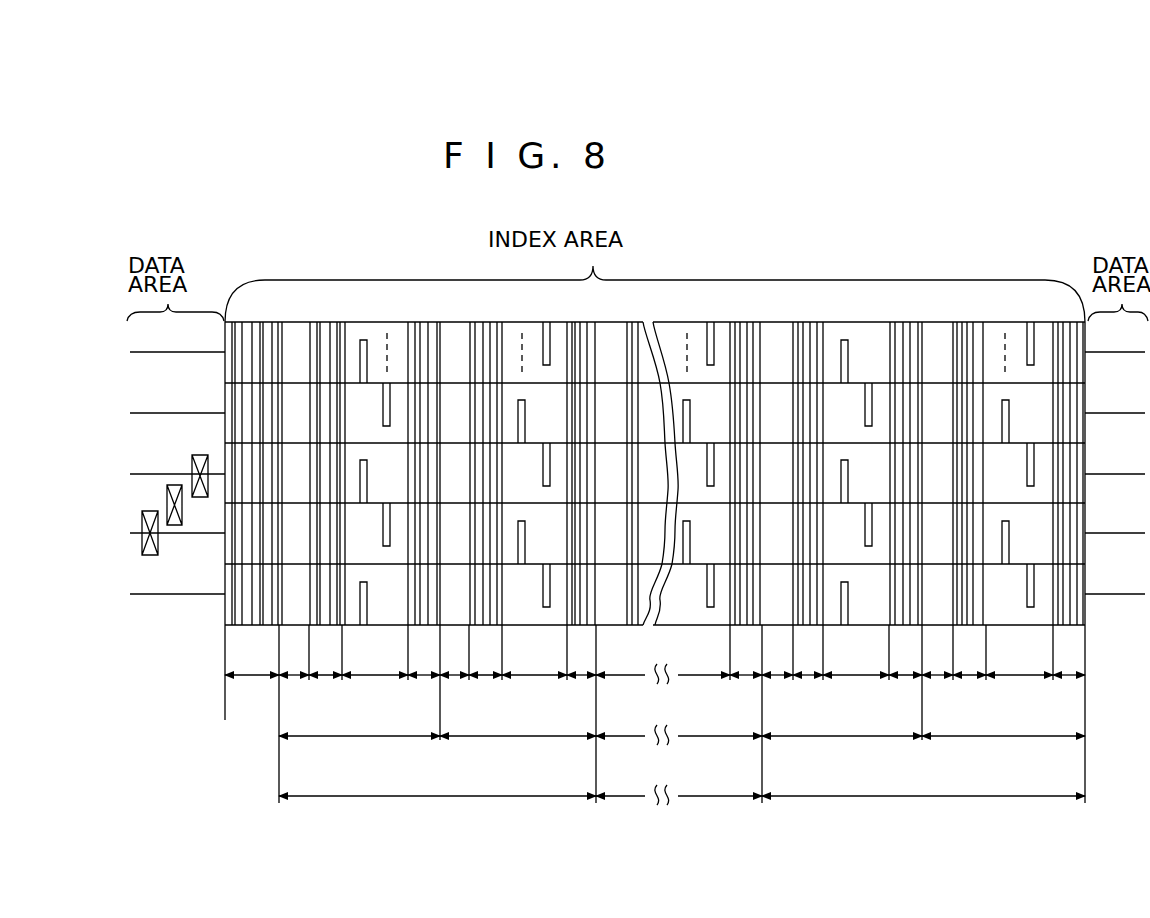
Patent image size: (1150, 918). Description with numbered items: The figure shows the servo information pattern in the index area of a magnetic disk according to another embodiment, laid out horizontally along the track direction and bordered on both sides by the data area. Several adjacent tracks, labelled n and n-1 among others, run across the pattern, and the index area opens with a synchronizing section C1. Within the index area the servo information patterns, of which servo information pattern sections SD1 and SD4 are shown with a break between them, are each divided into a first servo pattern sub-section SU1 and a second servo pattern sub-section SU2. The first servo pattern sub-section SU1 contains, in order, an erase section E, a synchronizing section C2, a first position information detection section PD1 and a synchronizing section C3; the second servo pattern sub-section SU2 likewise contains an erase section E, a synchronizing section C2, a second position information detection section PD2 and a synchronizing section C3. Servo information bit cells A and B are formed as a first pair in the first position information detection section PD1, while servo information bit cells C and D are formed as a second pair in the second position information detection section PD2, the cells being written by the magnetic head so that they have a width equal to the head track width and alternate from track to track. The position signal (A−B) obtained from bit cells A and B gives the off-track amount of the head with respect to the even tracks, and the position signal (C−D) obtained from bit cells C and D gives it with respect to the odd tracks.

The synchronizing section C1 is at (257, 495).
The erase section E is at (616, 655).
The synchronizing section C2 is at (647, 495).
The position information detection section PD1 is at (615, 500).
The synchronizing section C3 is at (746, 495).
The position information detection section PD2 is at (777, 495).
The first servo pattern sub-section SU1 is at (601, 715).
The second servo pattern sub-section SU2 is at (760, 715).
The servo information pattern section SD1 is at (395, 775).
The servo information pattern section SD4 is at (895, 775).
The servo information bit cell A is at (602, 304).
The servo information bit cell B is at (629, 304).
The servo information bit cell C is at (763, 304).
The servo information bit cell D is at (790, 304).
The track n is at (173, 505).
The track n-1 is at (158, 563).